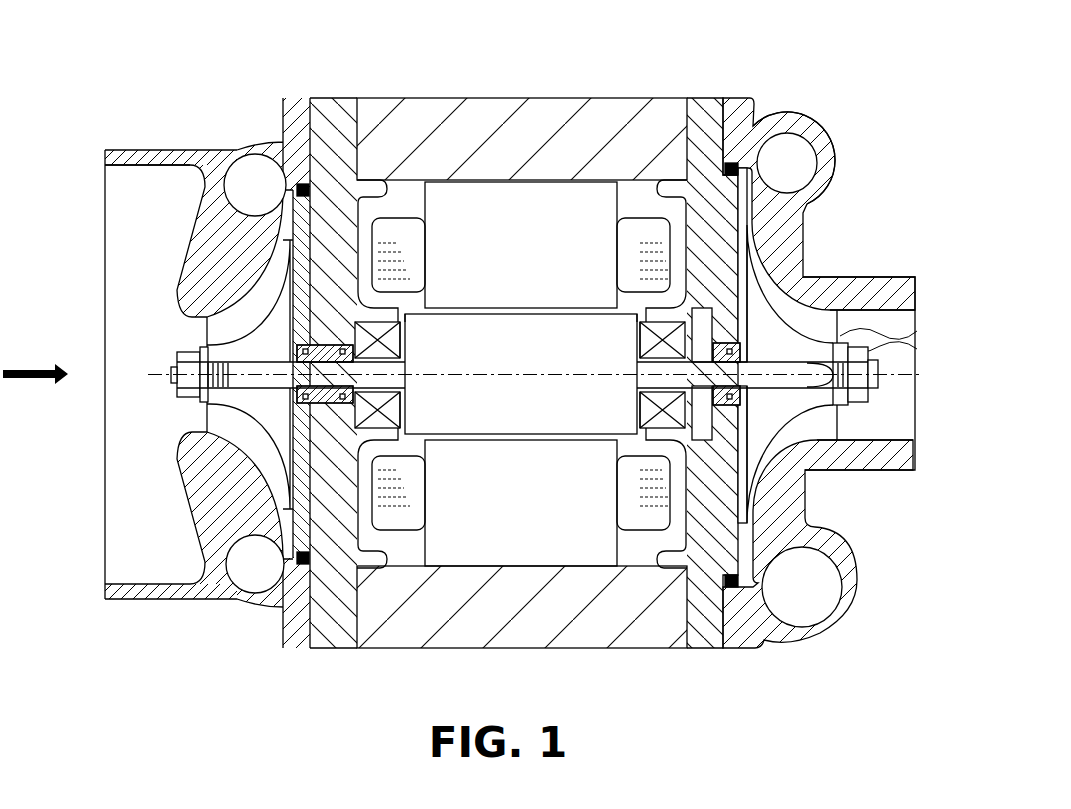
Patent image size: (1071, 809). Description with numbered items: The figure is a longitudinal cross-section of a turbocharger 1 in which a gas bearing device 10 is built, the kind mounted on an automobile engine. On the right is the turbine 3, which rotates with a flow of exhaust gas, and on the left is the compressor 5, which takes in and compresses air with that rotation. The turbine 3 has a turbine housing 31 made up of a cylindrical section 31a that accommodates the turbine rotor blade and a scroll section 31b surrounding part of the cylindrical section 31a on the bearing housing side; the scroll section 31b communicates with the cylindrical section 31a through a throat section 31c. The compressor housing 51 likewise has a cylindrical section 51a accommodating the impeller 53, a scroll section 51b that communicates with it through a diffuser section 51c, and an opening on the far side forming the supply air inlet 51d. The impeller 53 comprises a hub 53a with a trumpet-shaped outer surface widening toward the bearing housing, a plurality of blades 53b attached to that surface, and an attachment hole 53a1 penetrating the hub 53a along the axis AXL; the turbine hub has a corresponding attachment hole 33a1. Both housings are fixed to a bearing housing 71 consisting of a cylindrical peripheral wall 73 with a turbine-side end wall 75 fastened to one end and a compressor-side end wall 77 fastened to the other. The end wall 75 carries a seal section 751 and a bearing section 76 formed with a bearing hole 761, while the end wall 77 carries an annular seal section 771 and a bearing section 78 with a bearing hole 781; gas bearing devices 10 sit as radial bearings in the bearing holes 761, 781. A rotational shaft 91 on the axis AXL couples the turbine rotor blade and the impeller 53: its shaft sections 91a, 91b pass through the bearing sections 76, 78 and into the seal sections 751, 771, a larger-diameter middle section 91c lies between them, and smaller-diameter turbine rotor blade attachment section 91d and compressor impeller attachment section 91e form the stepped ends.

The turbocharger 1 is at (856, 96).
The turbine 3 is at (864, 141).
The compressor 5 is at (228, 139).
The gas bearing device 10 is at (628, 329).
The turbine housing 31 is at (820, 361).
The cylindrical section 31a is at (879, 277).
The scroll section 31b is at (836, 167).
The throat section 31c is at (774, 190).
The attachment hole 33a1 is at (867, 395).
The compressor housing 51 is at (171, 373).
The cylindrical section 51a is at (147, 150).
The scroll section 51b is at (207, 182).
The diffuser section 51c is at (286, 531).
The inlet 51d is at (105, 398).
The impeller 53 is at (150, 374).
The hub 53a is at (206, 344).
The attachment hole 53a1 is at (207, 397).
The blades 53b is at (225, 332).
The bearing housing 71 is at (612, 62).
The peripheral wall 73 is at (525, 98).
The end wall 75 is at (704, 98).
The seal section 751 is at (752, 386).
The bearing section 76 is at (617, 302).
The bearing hole 761 is at (637, 344).
The end wall 77 is at (338, 98).
The seal section 771 is at (298, 394).
The bearing section 78 is at (400, 326).
The bearing hole 781 is at (403, 344).
The rotational shaft 91 is at (501, 372).
The shaft section 91a is at (633, 414).
The shaft section 91b is at (403, 412).
The middle section 91c is at (513, 426).
The turbine rotor blade attachment section 91d is at (795, 392).
The compressor impeller attachment section 91e is at (200, 421).
The axis AXL is at (763, 373).